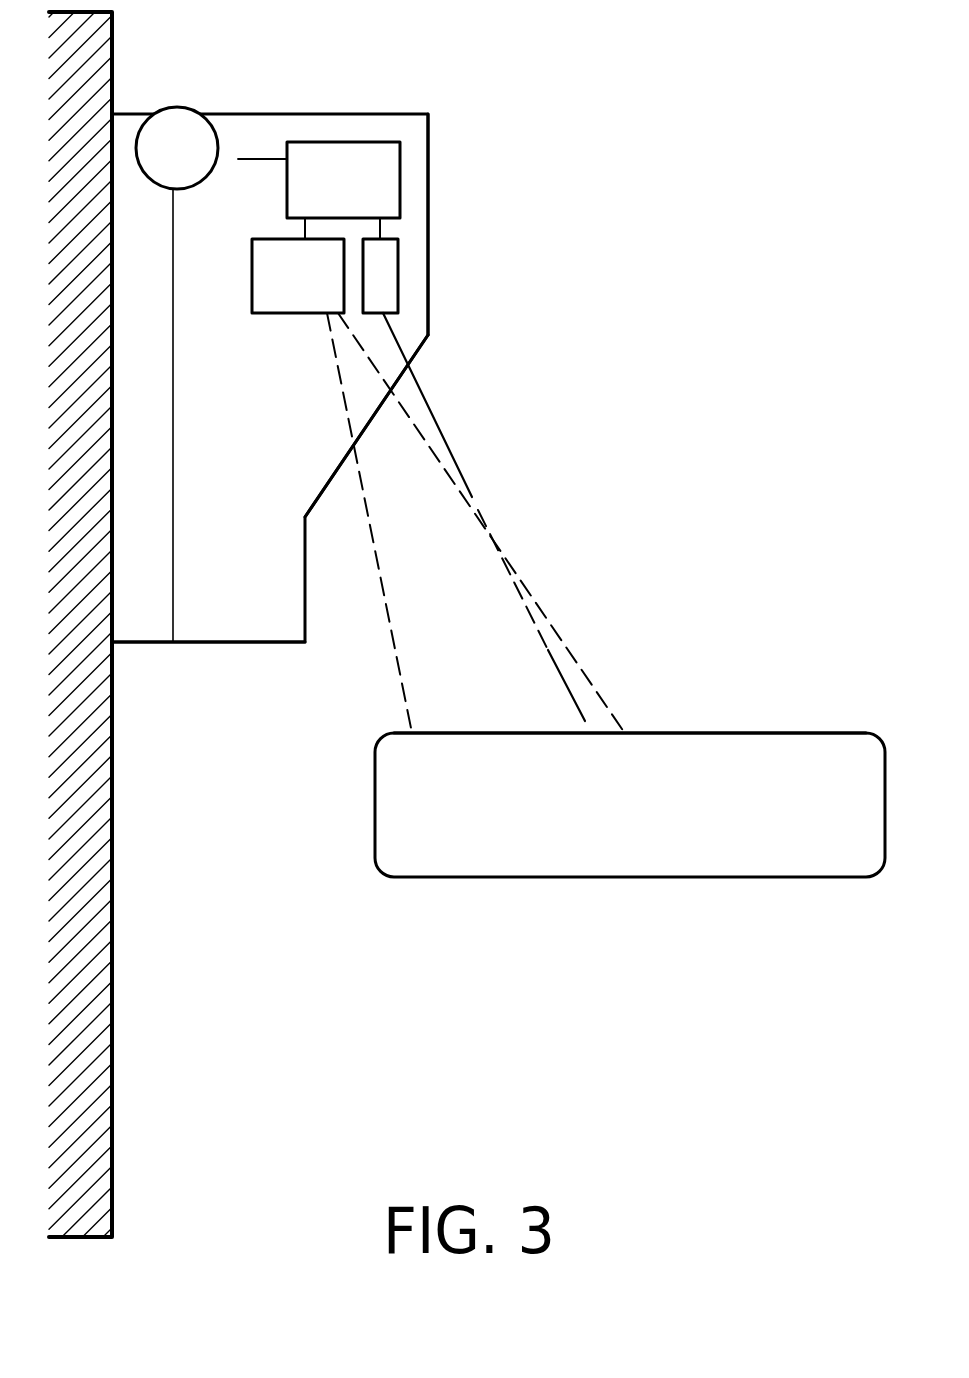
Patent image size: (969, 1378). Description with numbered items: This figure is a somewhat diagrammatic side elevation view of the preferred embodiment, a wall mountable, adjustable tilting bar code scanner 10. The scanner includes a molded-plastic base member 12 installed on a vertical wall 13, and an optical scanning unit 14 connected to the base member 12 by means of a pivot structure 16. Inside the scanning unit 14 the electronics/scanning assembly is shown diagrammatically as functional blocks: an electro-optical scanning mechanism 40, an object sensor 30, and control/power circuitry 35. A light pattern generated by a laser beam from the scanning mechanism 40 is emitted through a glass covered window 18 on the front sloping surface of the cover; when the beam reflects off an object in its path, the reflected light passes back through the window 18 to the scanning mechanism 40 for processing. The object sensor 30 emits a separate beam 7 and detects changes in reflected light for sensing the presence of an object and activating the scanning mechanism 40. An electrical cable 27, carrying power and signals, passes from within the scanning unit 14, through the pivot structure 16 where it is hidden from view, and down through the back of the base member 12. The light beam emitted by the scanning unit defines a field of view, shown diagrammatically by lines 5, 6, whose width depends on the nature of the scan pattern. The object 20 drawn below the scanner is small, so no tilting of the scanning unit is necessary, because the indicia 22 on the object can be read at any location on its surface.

The field of view line 5 is at (395, 653).
The field of view line 6 is at (545, 613).
The separate beam 7 is at (465, 473).
The bar code scanner 10 is at (291, 424).
The base member 12 is at (133, 647).
The vertical wall 13 is at (114, 1158).
The optical scanning unit 14 is at (429, 190).
The pivot structure 16 is at (177, 106).
The window 18 is at (370, 425).
The object 20 is at (652, 828).
The indicia 22 is at (542, 733).
The electrical cable 27 is at (258, 158).
The object sensor 30 is at (390, 265).
The control/power circuitry 35 is at (341, 158).
The electro-optical scanning mechanism 40 is at (262, 287).